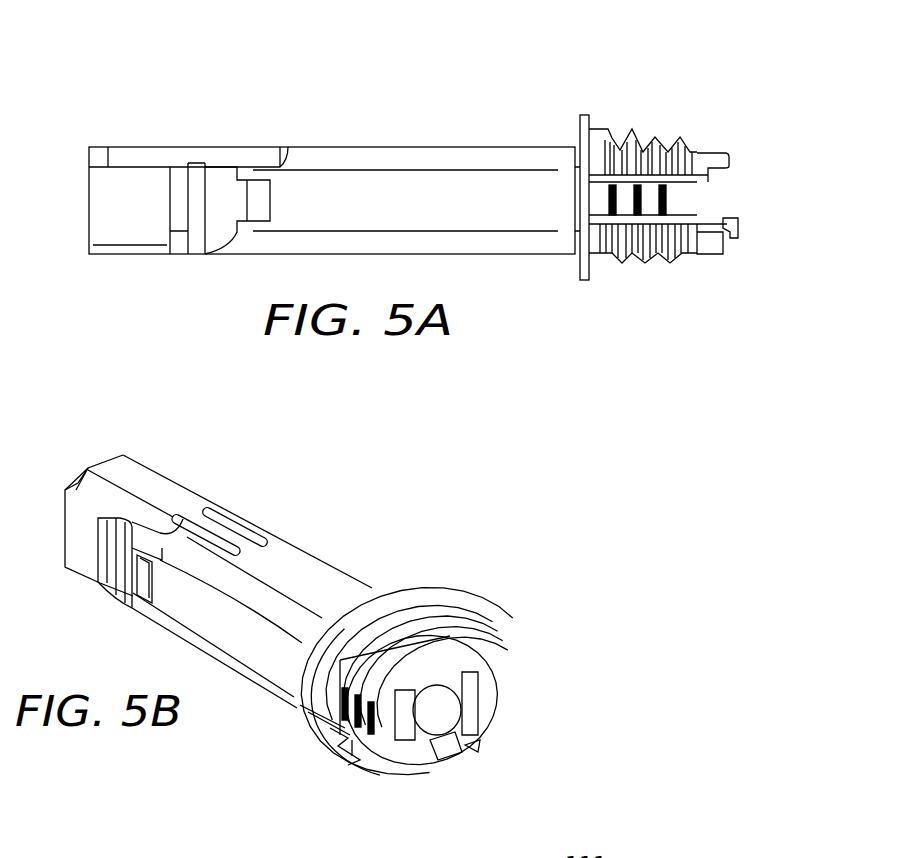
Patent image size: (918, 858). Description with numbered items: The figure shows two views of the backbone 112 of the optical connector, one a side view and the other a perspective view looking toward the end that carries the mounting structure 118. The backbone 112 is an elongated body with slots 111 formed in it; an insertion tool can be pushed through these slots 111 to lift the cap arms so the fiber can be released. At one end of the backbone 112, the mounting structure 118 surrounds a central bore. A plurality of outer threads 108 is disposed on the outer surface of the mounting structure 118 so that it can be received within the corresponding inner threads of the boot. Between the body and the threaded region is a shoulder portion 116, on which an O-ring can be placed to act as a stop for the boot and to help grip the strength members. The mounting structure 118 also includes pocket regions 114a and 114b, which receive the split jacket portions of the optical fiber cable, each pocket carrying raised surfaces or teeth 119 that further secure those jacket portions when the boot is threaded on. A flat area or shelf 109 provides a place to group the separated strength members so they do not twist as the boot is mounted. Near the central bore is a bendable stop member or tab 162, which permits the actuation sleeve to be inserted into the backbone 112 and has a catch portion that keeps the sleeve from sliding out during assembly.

In FIG. 5A, the backbone 112 is at (206, 86).
In FIG. 5A, the shoulder portion 116 is at (593, 280).
In FIG. 5B, the shoulder portion 116 is at (335, 745).
In FIG. 5A, the mounting structure 118 is at (640, 130).
In FIG. 5B, the mounting structure 118 is at (394, 625).
In FIG. 5A, the tab 162 is at (735, 224).
In FIG. 5B, the tab 162 is at (465, 760).
In FIG. 5A, the outer threads 108 is at (645, 263).
In FIG. 5B, the slots 111 is at (246, 533).
In FIG. 5B, the shelf 109 is at (422, 655).
In FIG. 5B, the pocket region 114b is at (478, 706).
In FIG. 5B, the pocket region 114a is at (378, 752).
In FIG. 5B, the teeth 119 is at (337, 722).